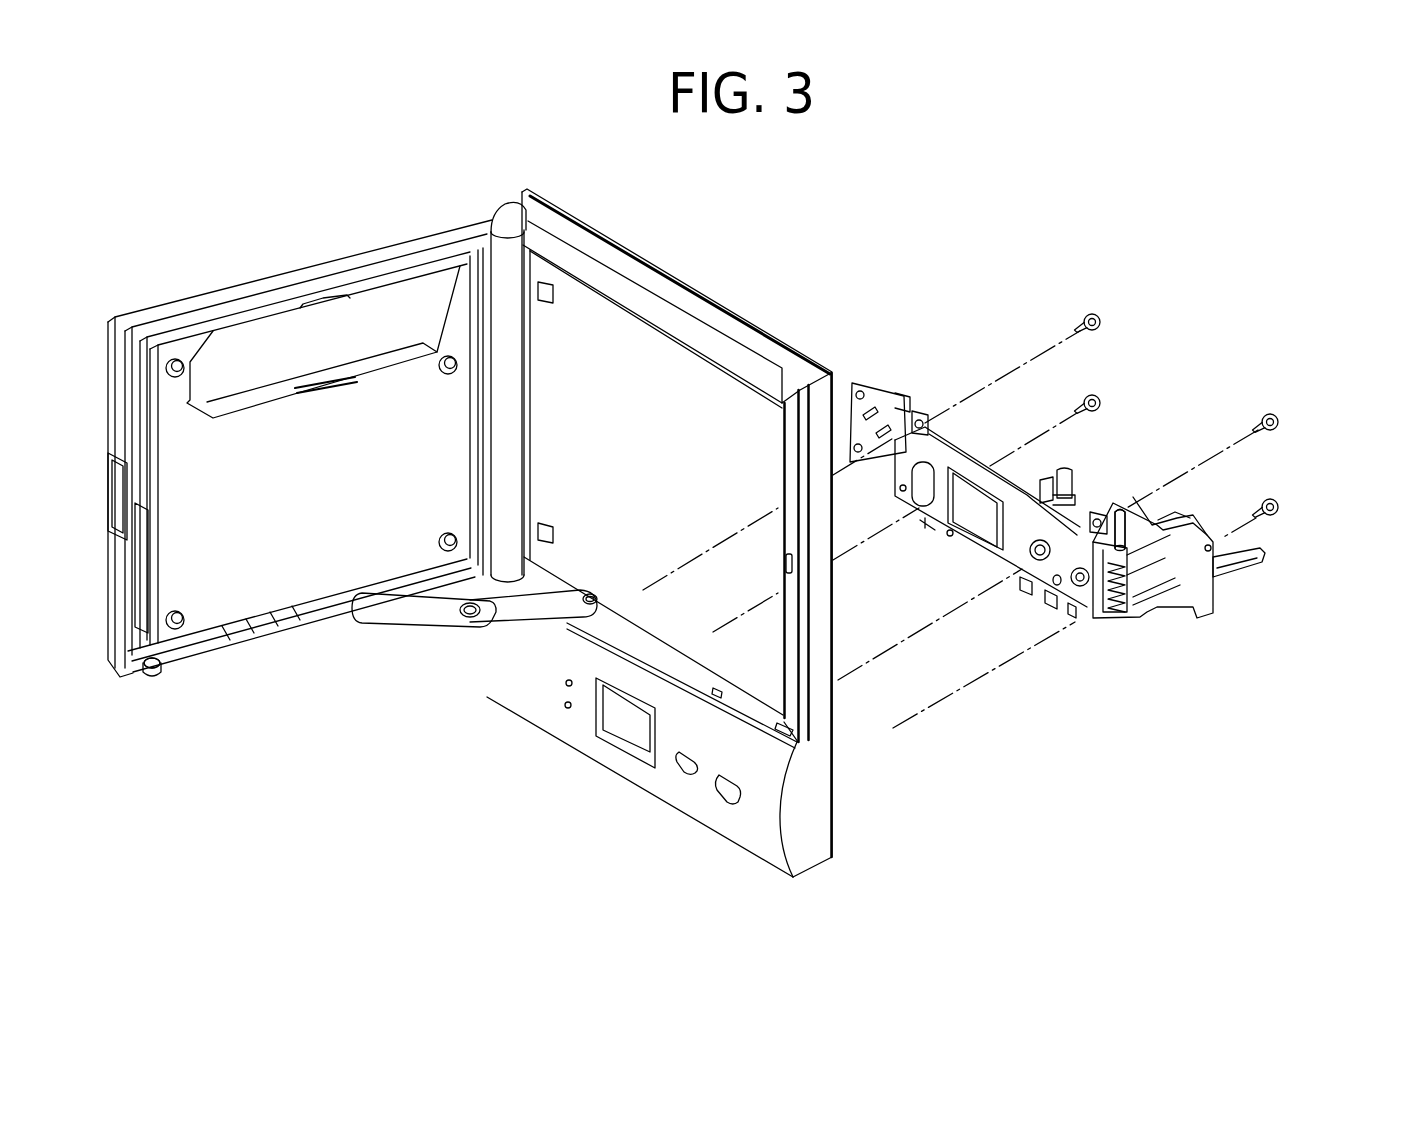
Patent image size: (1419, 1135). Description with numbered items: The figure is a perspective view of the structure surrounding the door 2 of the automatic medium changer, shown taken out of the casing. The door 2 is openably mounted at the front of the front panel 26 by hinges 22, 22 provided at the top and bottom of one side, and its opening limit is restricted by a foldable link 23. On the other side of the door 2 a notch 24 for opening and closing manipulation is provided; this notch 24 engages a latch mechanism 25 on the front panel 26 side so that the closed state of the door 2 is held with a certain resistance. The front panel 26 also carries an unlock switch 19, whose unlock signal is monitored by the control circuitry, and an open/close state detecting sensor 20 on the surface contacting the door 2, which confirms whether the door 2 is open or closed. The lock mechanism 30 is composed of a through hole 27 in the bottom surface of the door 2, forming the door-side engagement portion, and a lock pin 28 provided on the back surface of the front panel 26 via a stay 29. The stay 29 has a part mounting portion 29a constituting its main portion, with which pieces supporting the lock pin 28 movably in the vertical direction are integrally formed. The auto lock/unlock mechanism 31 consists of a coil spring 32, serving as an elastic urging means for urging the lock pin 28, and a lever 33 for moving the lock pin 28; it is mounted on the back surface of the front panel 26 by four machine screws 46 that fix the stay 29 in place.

The door 2 is at (229, 692).
The unlock switch 19 is at (722, 789).
The open/close state detecting sensor 20 is at (690, 686).
The hinge 22 is at (498, 221).
The foldable link 23 is at (412, 600).
The notch 24 is at (118, 500).
The latch mechanism 25 is at (790, 563).
The front panel 26 is at (692, 308).
The through hole 27 is at (160, 672).
The lock pin 28 is at (1108, 516).
The stay 29 is at (1083, 616).
The part mounting portion 29a is at (1193, 527).
The lock mechanism 30 is at (658, 623).
The auto lock/unlock mechanism 31 is at (1333, 688).
The coil spring 32 is at (1132, 617).
The lever 33 is at (1253, 568).
The machine screw 46 is at (1100, 316).